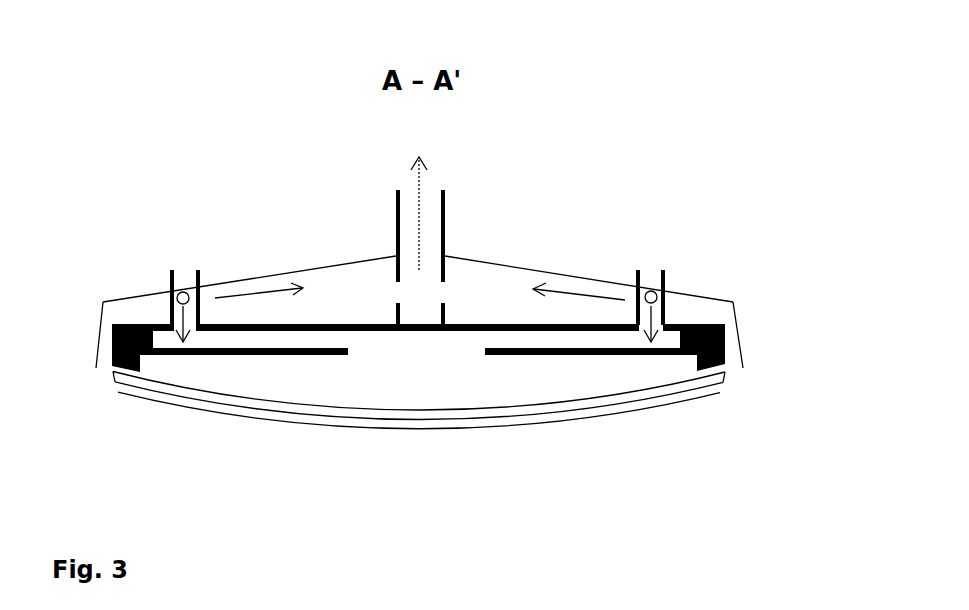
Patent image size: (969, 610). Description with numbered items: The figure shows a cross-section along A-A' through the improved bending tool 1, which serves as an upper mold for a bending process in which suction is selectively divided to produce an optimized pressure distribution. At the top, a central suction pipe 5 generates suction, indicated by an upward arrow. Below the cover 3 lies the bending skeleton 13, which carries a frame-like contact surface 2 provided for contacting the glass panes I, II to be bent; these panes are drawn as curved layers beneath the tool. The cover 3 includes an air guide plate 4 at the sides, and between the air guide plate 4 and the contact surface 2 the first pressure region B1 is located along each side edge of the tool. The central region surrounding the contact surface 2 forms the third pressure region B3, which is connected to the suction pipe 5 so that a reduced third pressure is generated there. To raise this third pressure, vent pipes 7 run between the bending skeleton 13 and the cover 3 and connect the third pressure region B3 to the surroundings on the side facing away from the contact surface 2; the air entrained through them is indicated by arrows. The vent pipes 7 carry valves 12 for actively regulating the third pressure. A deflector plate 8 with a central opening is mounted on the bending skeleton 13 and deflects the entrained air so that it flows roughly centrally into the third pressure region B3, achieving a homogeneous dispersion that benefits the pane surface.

The bending tool 1 is at (557, 130).
The contact surface 2 is at (113, 366).
The cover 3 is at (223, 278).
The air guide plate 4 is at (94, 332).
The suction pipe 5 is at (396, 220).
The vent pipes 7 is at (170, 283).
The deflector plate 8 is at (295, 355).
The valves 12 is at (182, 291).
The bending skeleton 13 is at (477, 325).
The first pressure region B1 is at (95, 381).
The third pressure region B3 is at (454, 385).
The glass pane I is at (195, 392).
The glass pane II is at (217, 410).